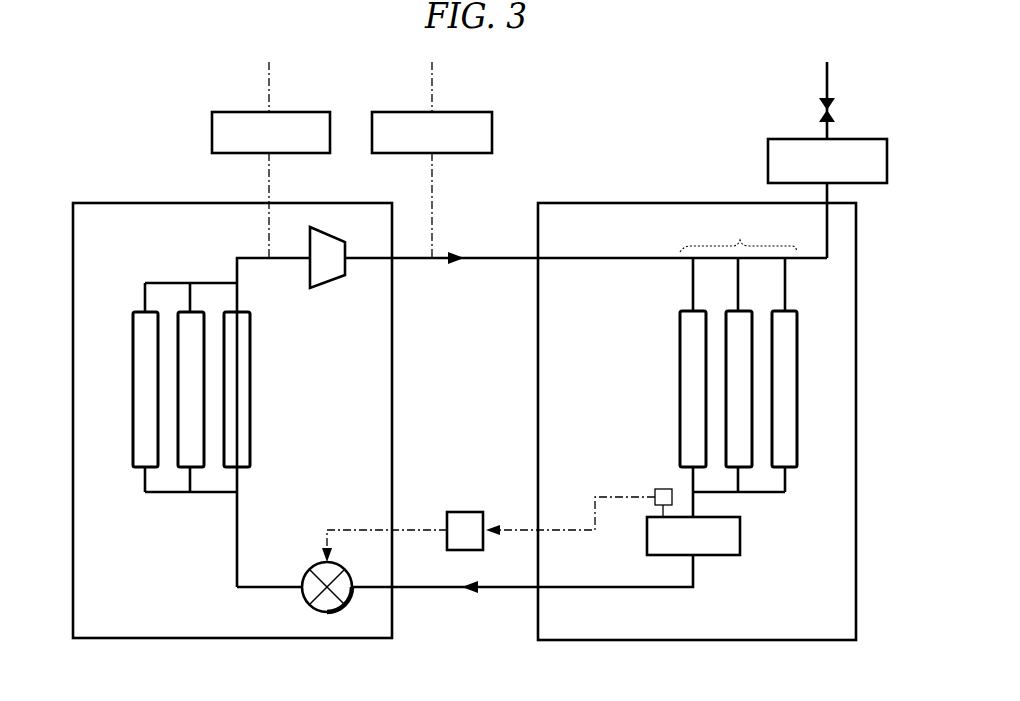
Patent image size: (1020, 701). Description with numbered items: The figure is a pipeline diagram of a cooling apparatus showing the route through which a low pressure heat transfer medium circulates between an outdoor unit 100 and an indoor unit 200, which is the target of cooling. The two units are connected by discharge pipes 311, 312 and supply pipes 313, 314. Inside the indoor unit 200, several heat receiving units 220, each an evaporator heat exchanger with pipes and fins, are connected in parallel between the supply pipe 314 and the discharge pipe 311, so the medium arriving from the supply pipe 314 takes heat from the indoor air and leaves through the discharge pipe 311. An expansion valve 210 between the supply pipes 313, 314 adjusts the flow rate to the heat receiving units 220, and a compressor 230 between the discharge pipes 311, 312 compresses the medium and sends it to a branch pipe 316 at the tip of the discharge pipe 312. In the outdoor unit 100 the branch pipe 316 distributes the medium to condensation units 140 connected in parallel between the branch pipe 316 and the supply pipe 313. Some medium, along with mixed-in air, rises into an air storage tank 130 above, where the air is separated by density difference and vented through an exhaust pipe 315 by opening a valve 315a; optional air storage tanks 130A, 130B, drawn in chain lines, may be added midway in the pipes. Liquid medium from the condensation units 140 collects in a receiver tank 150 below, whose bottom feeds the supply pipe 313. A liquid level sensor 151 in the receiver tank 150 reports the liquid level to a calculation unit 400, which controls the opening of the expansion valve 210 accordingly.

The outdoor unit 100 is at (635, 203).
The air storage tank 130 is at (768, 155).
The air storage tank 130A is at (212, 130).
The air storage tank 130B is at (492, 133).
The condensation unit 140 is at (685, 378).
The receiver tank 150 is at (722, 556).
The liquid level sensor 151 is at (657, 492).
The indoor unit 200 is at (120, 203).
The expansion valve 210 is at (308, 562).
The heat receiving unit 220 is at (247, 390).
The compressor 230 is at (328, 277).
The discharge pipe 311 is at (253, 257).
The discharge pipe 312 is at (500, 256).
The supply pipe 313 is at (612, 590).
The supply pipe 314 is at (245, 592).
The exhaust pipe 315 is at (827, 82).
The valve 315a is at (830, 112).
The branch pipe 316 is at (738, 263).
The calculation unit 400 is at (465, 512).